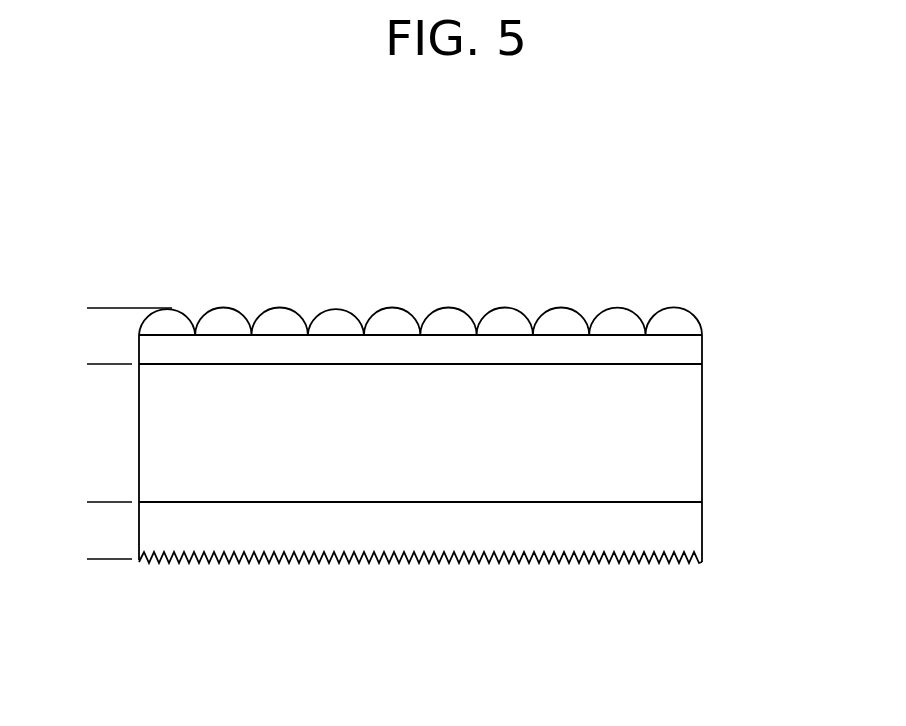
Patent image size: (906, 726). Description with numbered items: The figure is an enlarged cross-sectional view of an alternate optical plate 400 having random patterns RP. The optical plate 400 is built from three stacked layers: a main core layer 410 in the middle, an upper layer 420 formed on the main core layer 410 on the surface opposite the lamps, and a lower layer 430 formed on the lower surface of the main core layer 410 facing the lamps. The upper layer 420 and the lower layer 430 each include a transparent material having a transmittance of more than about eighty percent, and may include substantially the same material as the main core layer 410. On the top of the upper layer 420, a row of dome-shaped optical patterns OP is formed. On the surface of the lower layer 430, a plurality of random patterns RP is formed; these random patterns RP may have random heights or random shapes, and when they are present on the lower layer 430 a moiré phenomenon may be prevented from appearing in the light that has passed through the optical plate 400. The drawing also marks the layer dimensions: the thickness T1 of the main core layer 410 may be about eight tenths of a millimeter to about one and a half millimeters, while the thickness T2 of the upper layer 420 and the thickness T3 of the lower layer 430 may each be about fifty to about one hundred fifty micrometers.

The optical plate 400 is at (487, 438).
The main core layer 410 is at (714, 362).
The upper layer 420 is at (455, 399).
The lower layer 430 is at (455, 570).
The optical patterns OP is at (616, 311).
The random patterns RP is at (645, 563).
The thickness of the main core layer T1 is at (93, 364).
The thickness of the upper layer T2 is at (93, 308).
The thickness of the lower layer T3 is at (93, 502).